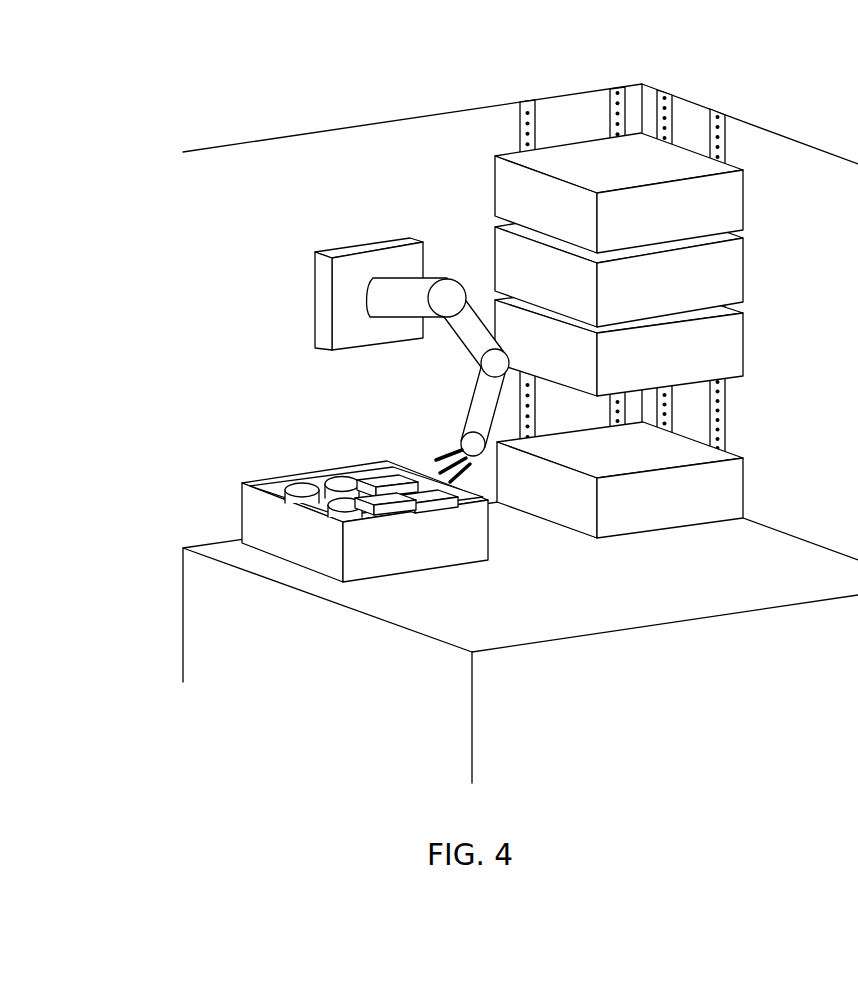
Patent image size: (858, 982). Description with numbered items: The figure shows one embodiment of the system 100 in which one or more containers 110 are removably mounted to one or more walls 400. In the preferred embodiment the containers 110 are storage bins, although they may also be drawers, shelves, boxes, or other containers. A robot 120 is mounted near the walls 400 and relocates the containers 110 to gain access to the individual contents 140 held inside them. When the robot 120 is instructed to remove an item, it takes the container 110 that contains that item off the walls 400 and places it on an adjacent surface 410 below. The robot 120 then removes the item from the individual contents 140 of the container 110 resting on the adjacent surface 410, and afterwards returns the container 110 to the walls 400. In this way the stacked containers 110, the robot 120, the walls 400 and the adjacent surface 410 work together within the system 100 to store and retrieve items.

The system 100 is at (237, 64).
The container 110 is at (492, 357).
The robot 120 is at (337, 320).
The individual contents 140 is at (383, 481).
The wall 400 is at (448, 192).
The adjacent surface 410 is at (598, 604).